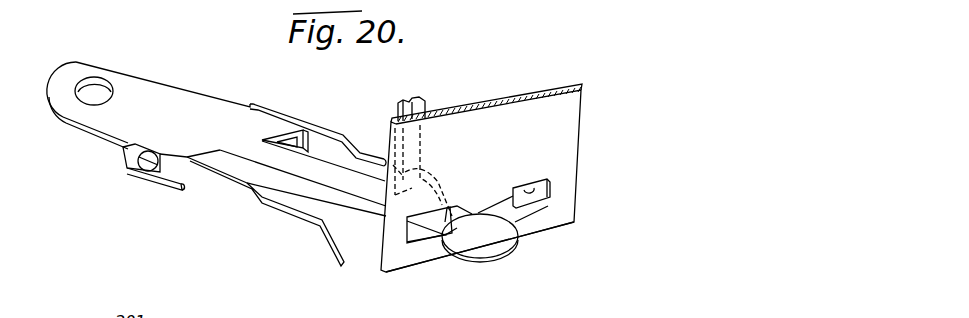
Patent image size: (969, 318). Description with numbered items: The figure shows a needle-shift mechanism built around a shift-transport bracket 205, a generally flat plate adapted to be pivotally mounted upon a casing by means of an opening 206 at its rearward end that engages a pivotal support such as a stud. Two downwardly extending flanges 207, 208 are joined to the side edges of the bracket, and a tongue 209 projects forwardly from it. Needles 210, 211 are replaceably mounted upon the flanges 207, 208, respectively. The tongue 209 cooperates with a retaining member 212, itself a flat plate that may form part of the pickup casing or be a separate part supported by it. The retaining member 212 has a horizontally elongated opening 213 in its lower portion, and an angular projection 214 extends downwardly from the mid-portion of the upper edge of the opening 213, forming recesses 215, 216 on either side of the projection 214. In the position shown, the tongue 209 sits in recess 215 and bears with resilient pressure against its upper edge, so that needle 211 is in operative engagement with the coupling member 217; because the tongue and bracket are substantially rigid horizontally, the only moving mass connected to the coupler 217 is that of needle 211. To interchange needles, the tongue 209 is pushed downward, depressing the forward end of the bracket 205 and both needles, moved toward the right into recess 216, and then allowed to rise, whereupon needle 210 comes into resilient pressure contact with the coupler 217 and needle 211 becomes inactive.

The shift-transport bracket 205 is at (173, 108).
The opening 206 is at (98, 83).
The flange 207 is at (163, 186).
The flange 208 is at (300, 143).
The tongue 209 is at (478, 247).
The needle 210 is at (247, 199).
The needle 211 is at (340, 138).
The retaining member 212 is at (570, 140).
The horizontally elongated opening 213 is at (545, 198).
The angular projection 214 is at (523, 223).
The recess 215 is at (432, 210).
The recess 216 is at (530, 189).
The coupling member 217 is at (427, 111).